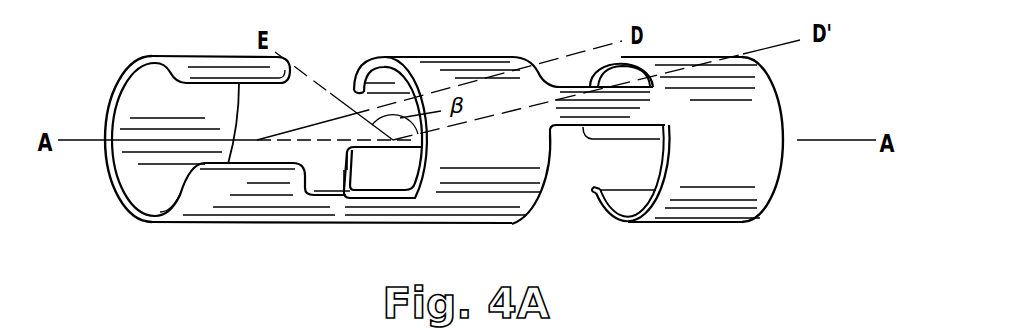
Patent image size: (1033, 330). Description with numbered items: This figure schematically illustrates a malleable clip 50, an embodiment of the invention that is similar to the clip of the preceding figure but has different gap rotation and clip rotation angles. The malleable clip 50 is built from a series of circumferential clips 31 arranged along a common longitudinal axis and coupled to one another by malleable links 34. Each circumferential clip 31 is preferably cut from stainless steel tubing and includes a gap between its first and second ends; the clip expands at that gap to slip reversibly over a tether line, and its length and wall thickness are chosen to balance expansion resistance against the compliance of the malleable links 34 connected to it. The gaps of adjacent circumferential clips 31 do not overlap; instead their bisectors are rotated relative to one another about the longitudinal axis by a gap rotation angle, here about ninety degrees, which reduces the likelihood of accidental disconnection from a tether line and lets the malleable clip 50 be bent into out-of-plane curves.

The malleable clip 50 is at (115, 62).
The circumferential clip 31 is at (213, 230).
The malleable link 34 is at (353, 210).